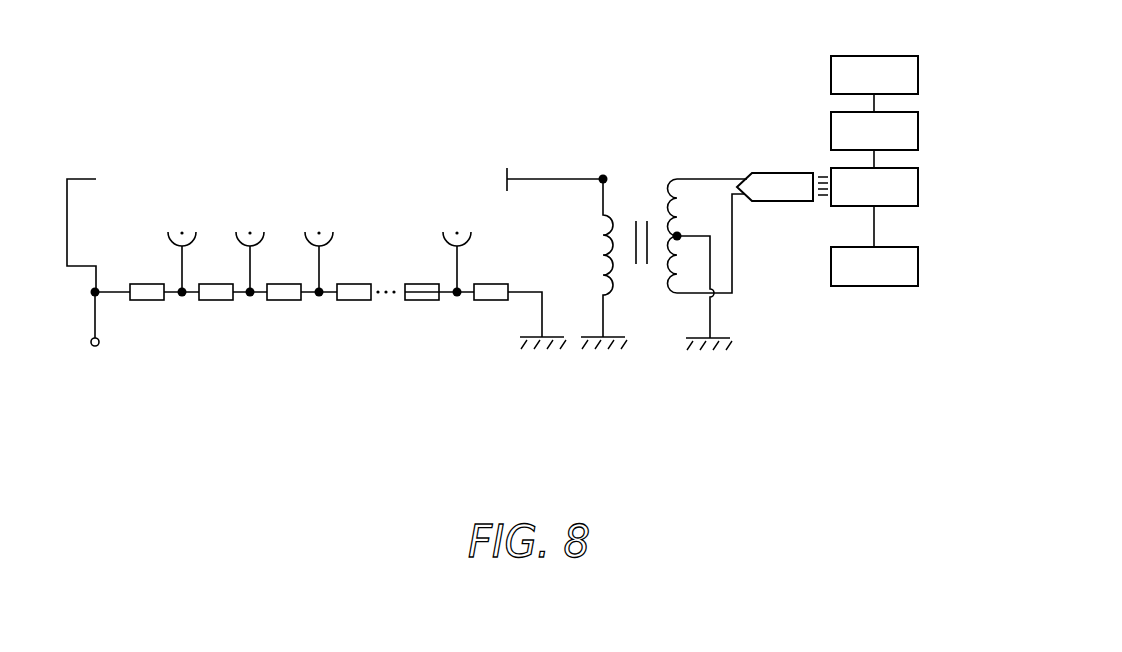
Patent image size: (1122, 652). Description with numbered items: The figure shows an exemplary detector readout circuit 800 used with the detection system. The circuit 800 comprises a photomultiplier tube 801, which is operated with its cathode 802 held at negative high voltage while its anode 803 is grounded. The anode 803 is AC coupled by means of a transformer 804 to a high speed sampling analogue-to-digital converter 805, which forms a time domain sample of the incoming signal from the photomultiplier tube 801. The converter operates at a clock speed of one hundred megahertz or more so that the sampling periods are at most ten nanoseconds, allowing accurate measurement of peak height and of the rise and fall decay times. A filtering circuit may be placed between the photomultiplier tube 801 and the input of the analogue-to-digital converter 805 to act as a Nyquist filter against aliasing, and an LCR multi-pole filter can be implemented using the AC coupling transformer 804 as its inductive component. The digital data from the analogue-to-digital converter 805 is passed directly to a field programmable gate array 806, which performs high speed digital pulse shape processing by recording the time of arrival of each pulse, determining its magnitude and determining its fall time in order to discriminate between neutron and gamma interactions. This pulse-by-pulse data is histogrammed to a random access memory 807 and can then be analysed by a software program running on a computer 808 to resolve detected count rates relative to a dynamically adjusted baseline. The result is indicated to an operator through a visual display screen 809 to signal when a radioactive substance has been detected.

The circuit 800 is at (532, 450).
The photomultiplier tube 801 is at (318, 257).
The cathode 802 is at (68, 218).
The anode 803 is at (540, 310).
The transformer 804 is at (633, 195).
The analogue-to-digital converter 805 is at (775, 173).
The field programmable gate array 806 is at (843, 207).
The random access memory 807 is at (845, 287).
The computer 808 is at (831, 120).
The visual display screen 809 is at (831, 63).